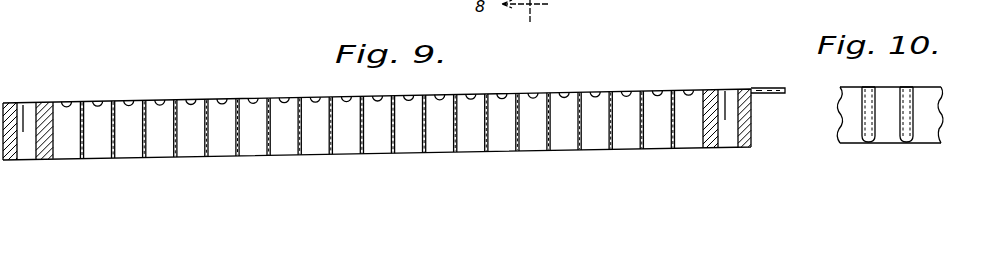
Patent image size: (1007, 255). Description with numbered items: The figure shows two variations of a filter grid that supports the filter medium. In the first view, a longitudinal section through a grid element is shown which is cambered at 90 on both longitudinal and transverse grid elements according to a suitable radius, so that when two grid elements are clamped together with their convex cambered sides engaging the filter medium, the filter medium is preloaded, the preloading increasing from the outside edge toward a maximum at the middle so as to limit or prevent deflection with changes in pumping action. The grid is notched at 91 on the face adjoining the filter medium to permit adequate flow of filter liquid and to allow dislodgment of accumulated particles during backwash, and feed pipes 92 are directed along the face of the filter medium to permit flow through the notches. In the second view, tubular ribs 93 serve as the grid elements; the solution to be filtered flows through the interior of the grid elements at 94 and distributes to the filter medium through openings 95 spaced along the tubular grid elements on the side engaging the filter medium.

In FIG. 9, the camber 90 is at (466, 84).
In FIG. 9, the notches 91 is at (180, 93).
In FIG. 9, the pipes 92 is at (777, 95).
In FIG. 10, the tubular ribs 93 is at (912, 122).
In FIG. 10, the interior of the grid elements 94 is at (875, 143).
In FIG. 10, the openings 95 is at (910, 87).